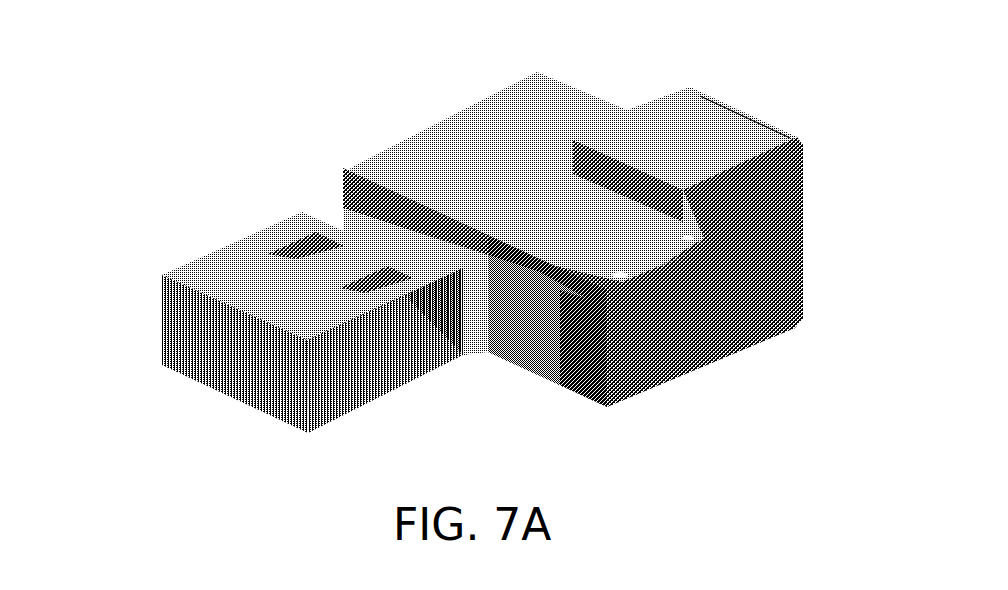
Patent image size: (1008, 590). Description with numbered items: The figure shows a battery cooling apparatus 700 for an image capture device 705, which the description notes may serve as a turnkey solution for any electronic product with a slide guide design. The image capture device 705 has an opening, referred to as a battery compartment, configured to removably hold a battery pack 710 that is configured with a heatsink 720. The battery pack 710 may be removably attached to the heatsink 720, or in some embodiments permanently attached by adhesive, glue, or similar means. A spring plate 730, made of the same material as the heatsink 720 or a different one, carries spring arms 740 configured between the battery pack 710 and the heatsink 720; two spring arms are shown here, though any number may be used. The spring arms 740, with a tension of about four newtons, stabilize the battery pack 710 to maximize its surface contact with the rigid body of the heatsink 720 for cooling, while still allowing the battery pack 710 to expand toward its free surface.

The battery cooling apparatus 700 is at (464, 224).
The image capture device 705 is at (746, 288).
The battery pack 710 is at (183, 372).
The heatsink 720 is at (371, 372).
The spring plate 730 is at (225, 282).
The spring arms 740 is at (366, 297).